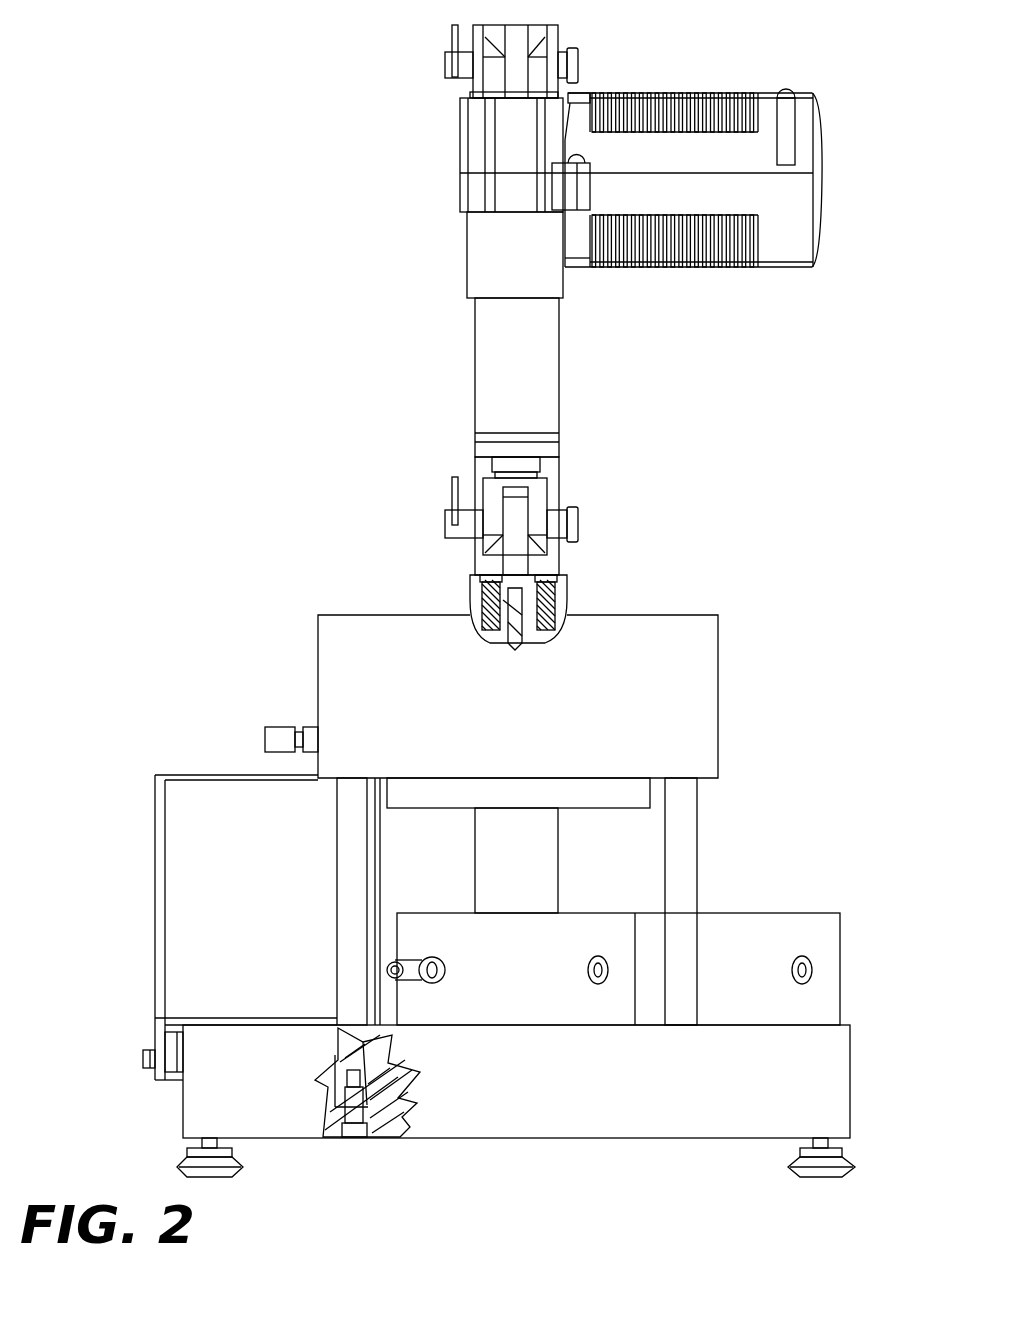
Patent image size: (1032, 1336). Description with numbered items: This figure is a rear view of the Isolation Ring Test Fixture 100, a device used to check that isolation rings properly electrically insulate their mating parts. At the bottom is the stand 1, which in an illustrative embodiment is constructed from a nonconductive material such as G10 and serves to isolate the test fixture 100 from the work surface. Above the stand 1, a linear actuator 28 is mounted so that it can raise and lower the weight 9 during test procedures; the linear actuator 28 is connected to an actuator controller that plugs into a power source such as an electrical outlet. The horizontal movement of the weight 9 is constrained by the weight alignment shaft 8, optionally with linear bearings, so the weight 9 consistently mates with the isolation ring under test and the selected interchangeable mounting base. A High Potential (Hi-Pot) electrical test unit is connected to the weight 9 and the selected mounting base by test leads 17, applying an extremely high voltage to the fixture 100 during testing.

The Isolation Ring Test Fixture 100 is at (778, 525).
The linear actuator 28 is at (462, 237).
The weight 9 is at (315, 640).
The test leads 17 is at (255, 737).
The weight alignment shaft 8 is at (339, 956).
The stand 1 is at (180, 1123).